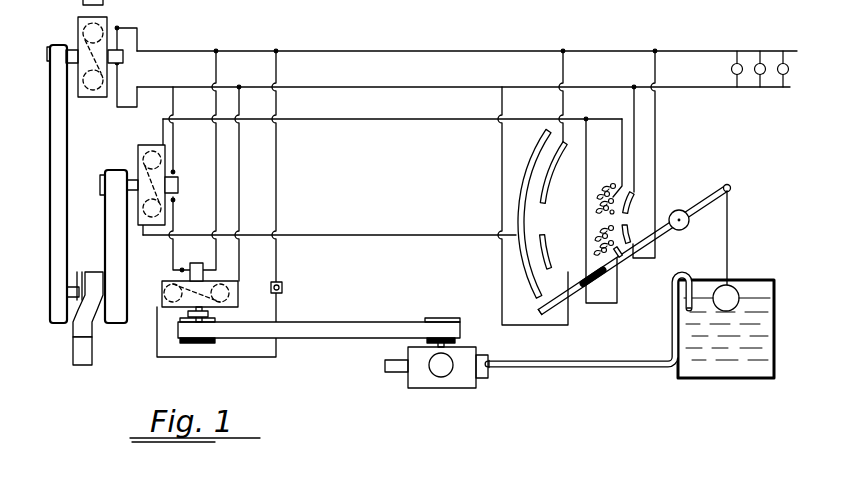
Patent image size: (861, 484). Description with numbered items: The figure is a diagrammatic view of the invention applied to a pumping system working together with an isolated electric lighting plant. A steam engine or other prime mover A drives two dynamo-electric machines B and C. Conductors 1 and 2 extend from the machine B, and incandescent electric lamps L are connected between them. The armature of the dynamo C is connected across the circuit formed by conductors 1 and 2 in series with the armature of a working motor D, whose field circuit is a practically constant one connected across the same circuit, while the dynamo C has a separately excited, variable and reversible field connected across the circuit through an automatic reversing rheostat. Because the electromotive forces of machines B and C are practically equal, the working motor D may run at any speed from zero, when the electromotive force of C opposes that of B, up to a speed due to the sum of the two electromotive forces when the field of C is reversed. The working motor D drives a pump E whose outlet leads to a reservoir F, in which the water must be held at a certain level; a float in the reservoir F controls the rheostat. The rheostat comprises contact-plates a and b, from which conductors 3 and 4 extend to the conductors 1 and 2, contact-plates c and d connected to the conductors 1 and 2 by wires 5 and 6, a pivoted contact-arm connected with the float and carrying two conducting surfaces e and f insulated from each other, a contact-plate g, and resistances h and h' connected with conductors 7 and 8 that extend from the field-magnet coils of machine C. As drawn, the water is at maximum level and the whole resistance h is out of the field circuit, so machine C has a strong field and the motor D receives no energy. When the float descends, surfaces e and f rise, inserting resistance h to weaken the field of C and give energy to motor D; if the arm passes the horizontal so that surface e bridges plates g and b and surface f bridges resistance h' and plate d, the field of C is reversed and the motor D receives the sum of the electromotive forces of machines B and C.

The conductor 1 is at (463, 78).
The conductor 2 is at (467, 41).
The conductor 3 is at (528, 213).
The conductor 4 is at (567, 95).
The wire 5 is at (650, 153).
The wire 6 is at (639, 138).
The conductor 7 is at (329, 226).
The conductor 8 is at (392, 158).
The steam engine A is at (87, 205).
The dynamo-electric machine B is at (94, 68).
The dynamo C is at (158, 185).
The working motor D is at (192, 287).
The pump E is at (443, 361).
The reservoir F is at (733, 284).
The incandescent electric lamps L is at (770, 69).
The contact-plate a is at (554, 252).
The contact-plate b is at (553, 173).
The contact-plate c is at (631, 234).
The contact-plate d is at (634, 203).
The conducting surface e is at (536, 319).
The conducting surface f is at (627, 268).
The contact-plate g is at (622, 250).
The resistance h is at (598, 255).
The resistance h' is at (606, 186).